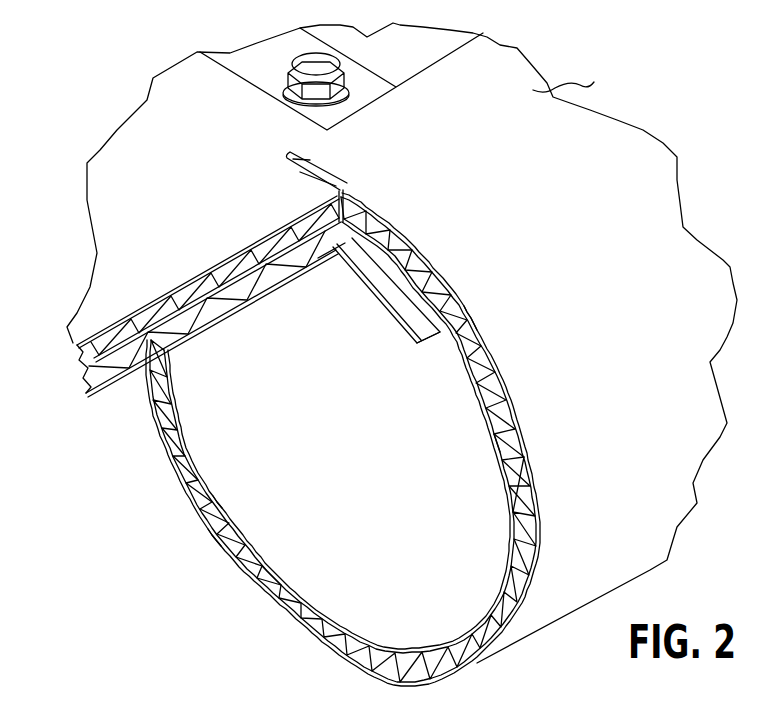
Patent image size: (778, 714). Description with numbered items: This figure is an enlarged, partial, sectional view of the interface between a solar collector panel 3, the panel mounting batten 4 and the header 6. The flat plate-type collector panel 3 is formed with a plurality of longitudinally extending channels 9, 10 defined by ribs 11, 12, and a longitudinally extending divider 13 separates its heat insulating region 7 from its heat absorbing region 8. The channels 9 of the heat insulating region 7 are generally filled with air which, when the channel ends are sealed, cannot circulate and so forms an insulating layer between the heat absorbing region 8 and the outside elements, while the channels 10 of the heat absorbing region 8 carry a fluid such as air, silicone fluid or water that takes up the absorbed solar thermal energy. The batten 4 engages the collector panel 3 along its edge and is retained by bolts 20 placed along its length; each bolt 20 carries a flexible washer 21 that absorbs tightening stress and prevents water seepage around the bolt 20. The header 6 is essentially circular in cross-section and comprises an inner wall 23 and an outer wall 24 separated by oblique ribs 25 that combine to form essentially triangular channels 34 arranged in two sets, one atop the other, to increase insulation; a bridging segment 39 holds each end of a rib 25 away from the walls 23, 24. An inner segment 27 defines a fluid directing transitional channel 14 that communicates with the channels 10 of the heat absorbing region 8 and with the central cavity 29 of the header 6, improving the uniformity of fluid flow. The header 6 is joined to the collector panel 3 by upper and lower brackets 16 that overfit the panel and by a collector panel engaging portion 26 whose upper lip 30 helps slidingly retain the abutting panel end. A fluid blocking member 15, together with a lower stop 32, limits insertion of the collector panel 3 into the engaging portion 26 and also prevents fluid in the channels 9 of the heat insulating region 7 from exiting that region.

The solar collector panel 3 is at (113, 162).
The batten 4 is at (388, 78).
The header 6 is at (573, 84).
The heat insulating region 7 is at (63, 365).
The heat absorbing region 8 is at (70, 388).
The channel 9 is at (135, 325).
The channel 10 is at (120, 378).
The rib 11 is at (302, 213).
The rib 12 is at (193, 333).
The divider 13 is at (150, 405).
The transitional channel 14 is at (397, 293).
The fluid blocking member 15 is at (343, 193).
The bracket 16 is at (290, 165).
The bolt 20 is at (327, 68).
The flexible washer 21 is at (312, 104).
The inner wall 23 is at (470, 377).
The outer wall 24 is at (222, 540).
The rib 25 is at (503, 443).
The collector panel engaging portion 26 is at (333, 168).
The inner segment 27 is at (405, 348).
The central cavity 29 is at (220, 440).
The upper lip 30 is at (300, 172).
The lower stop 32 is at (345, 243).
The triangular channel 34 is at (520, 453).
The bridging segment 39 is at (490, 352).